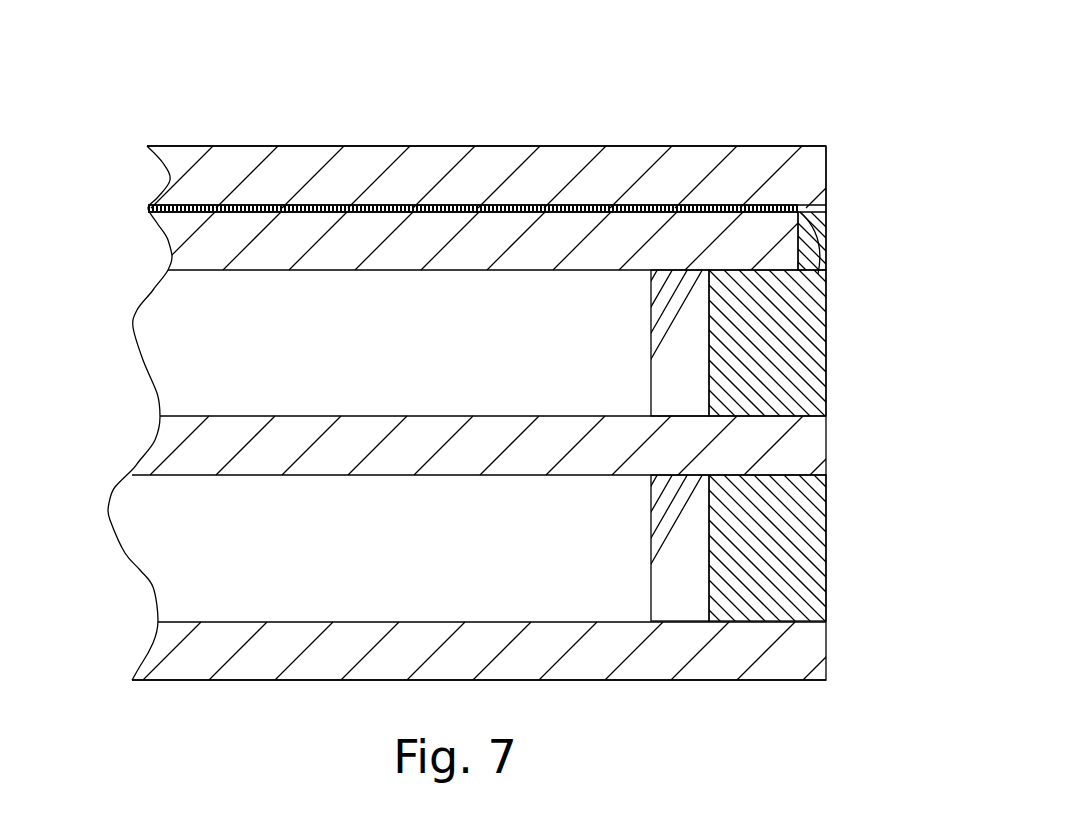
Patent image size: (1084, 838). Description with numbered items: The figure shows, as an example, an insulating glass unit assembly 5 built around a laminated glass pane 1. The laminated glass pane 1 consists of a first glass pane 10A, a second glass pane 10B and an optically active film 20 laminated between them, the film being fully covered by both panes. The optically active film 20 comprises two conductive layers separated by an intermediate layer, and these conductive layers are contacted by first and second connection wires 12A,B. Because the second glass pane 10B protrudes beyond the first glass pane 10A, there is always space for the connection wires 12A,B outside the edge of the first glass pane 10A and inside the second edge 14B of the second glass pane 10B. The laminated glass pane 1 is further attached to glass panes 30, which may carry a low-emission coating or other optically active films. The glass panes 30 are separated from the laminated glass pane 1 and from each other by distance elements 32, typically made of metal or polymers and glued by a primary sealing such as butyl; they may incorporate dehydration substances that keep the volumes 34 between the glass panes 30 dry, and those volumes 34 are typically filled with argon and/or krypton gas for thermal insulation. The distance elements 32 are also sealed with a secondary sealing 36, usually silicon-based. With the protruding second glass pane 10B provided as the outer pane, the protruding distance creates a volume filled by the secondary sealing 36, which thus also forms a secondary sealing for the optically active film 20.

The insulating glass unit assembly 5 is at (240, 92).
The laminated glass pane 1 is at (175, 163).
The first glass pane 10A is at (277, 246).
The second glass pane 10B is at (432, 155).
The first and second connection wires 12A,B is at (827, 247).
The second edge 14B is at (827, 172).
The optically active film 20 is at (430, 213).
The glass panes 30 is at (800, 447).
The distance elements 32 is at (673, 355).
The volumes 34 is at (163, 360).
The secondary sealing 36 is at (803, 363).